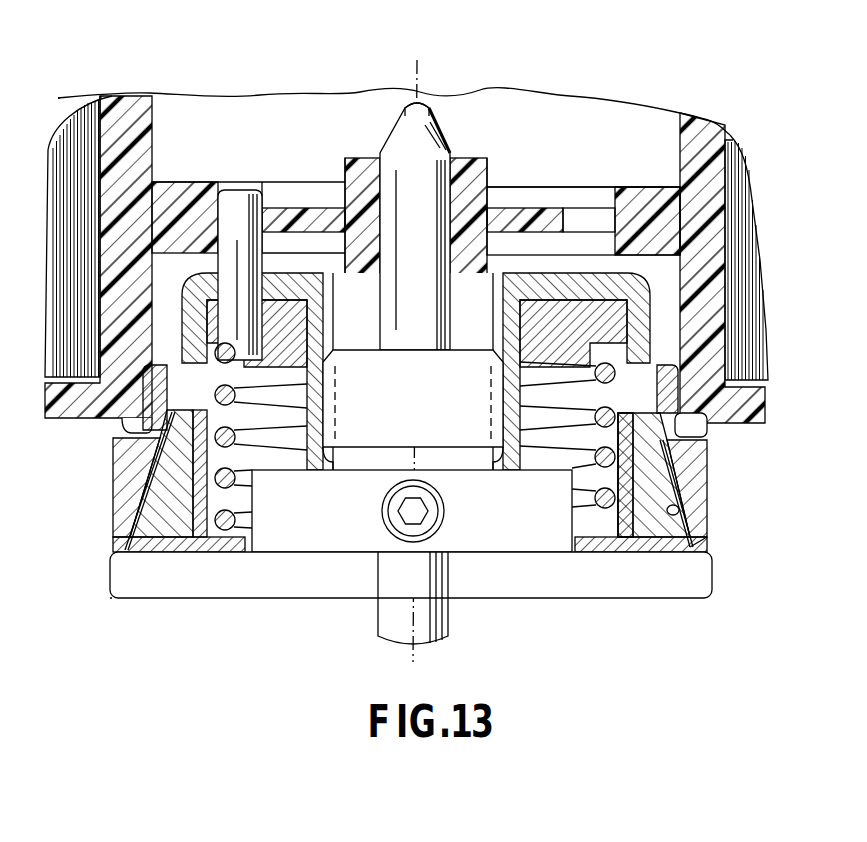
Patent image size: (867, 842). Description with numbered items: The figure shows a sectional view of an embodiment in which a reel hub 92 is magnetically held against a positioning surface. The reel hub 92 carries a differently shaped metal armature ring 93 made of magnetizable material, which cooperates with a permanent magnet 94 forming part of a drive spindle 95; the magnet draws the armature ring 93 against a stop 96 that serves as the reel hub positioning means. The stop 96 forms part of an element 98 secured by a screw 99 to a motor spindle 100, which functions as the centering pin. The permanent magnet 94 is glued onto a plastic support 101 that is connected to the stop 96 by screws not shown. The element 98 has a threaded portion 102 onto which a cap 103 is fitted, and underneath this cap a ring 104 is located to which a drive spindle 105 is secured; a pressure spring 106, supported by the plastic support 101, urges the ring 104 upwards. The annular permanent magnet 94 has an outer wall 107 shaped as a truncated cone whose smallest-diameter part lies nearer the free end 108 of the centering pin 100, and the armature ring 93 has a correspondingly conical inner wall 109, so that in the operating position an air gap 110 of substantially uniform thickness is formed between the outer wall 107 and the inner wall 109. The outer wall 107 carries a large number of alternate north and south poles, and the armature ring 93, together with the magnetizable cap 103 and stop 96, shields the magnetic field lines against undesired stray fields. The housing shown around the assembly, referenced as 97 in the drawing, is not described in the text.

The reel hub 92 is at (352, 84).
The metal armature ring 93 is at (127, 476).
The permanent magnet 94 is at (655, 473).
The drive spindle 95 is at (232, 603).
The stop 96 is at (124, 573).
The housing 97 is at (140, 93).
The element 98 is at (497, 540).
The screw 99 is at (432, 504).
The motor spindle 100 is at (430, 168).
The plastic support 101 is at (625, 453).
The threaded portion 102 is at (356, 447).
The cap 103 is at (508, 280).
The ring 104 is at (548, 320).
The drive spindle 105 is at (238, 200).
The pressure spring 106 is at (527, 412).
The outer wall 107 is at (693, 520).
The free end 108 is at (421, 112).
The inner wall 109 is at (690, 501).
The air gap 110 is at (695, 546).